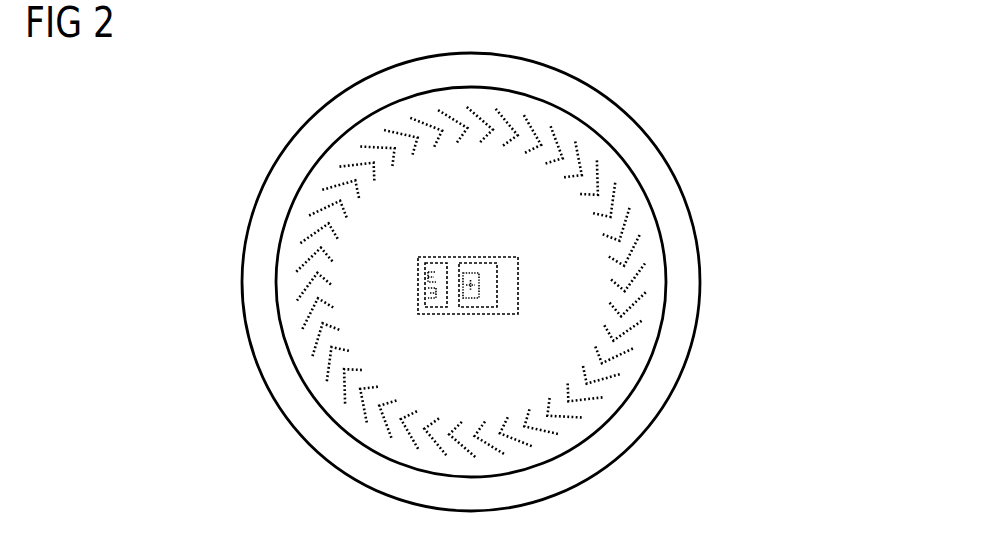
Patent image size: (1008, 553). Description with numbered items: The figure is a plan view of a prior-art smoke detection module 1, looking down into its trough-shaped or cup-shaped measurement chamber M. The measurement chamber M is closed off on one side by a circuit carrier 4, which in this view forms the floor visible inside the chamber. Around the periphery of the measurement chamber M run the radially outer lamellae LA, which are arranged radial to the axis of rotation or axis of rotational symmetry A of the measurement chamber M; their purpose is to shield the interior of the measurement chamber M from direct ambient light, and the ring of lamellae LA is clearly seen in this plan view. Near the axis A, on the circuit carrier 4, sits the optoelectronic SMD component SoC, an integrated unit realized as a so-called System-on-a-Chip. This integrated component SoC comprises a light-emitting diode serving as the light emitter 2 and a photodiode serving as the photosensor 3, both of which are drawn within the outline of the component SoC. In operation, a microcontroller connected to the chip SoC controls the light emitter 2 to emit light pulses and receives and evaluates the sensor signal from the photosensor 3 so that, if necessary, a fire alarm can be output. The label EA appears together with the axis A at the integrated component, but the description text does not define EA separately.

The smoke detection module 1 is at (640, 95).
The measurement chamber M is at (661, 153).
The circuit carrier 4 is at (420, 211).
The lamellae LA is at (641, 303).
The optoelectronic SMD component SoC is at (518, 283).
The light emitter 2 is at (432, 305).
The photosensor 3 is at (470, 299).
The axis of rotational symmetry A is at (471, 284).
The receiving antenna EA is at (470, 285).